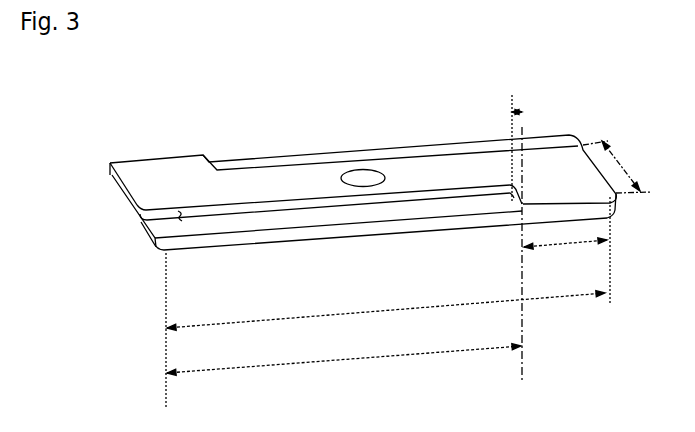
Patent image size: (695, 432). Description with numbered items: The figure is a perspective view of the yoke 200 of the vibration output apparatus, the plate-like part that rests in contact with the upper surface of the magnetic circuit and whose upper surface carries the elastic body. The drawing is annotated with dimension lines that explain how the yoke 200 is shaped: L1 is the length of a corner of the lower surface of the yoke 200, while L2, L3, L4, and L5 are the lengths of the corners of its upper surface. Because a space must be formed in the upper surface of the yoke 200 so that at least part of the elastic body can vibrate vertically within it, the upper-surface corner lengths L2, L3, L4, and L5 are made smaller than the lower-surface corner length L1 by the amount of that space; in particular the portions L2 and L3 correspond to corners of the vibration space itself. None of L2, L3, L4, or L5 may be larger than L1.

The yoke 200 is at (168, 178).
The length of the corner of the lower surface of the yoke L1 is at (386, 316).
The length of a corner of the upper surface of the yoke L2 is at (344, 365).
The length of a corner of the upper surface of the yoke L3 is at (522, 112).
The length of a corner of the upper surface of the yoke L4 is at (565, 255).
The length of a corner of the upper surface of the yoke L5 is at (617, 167).